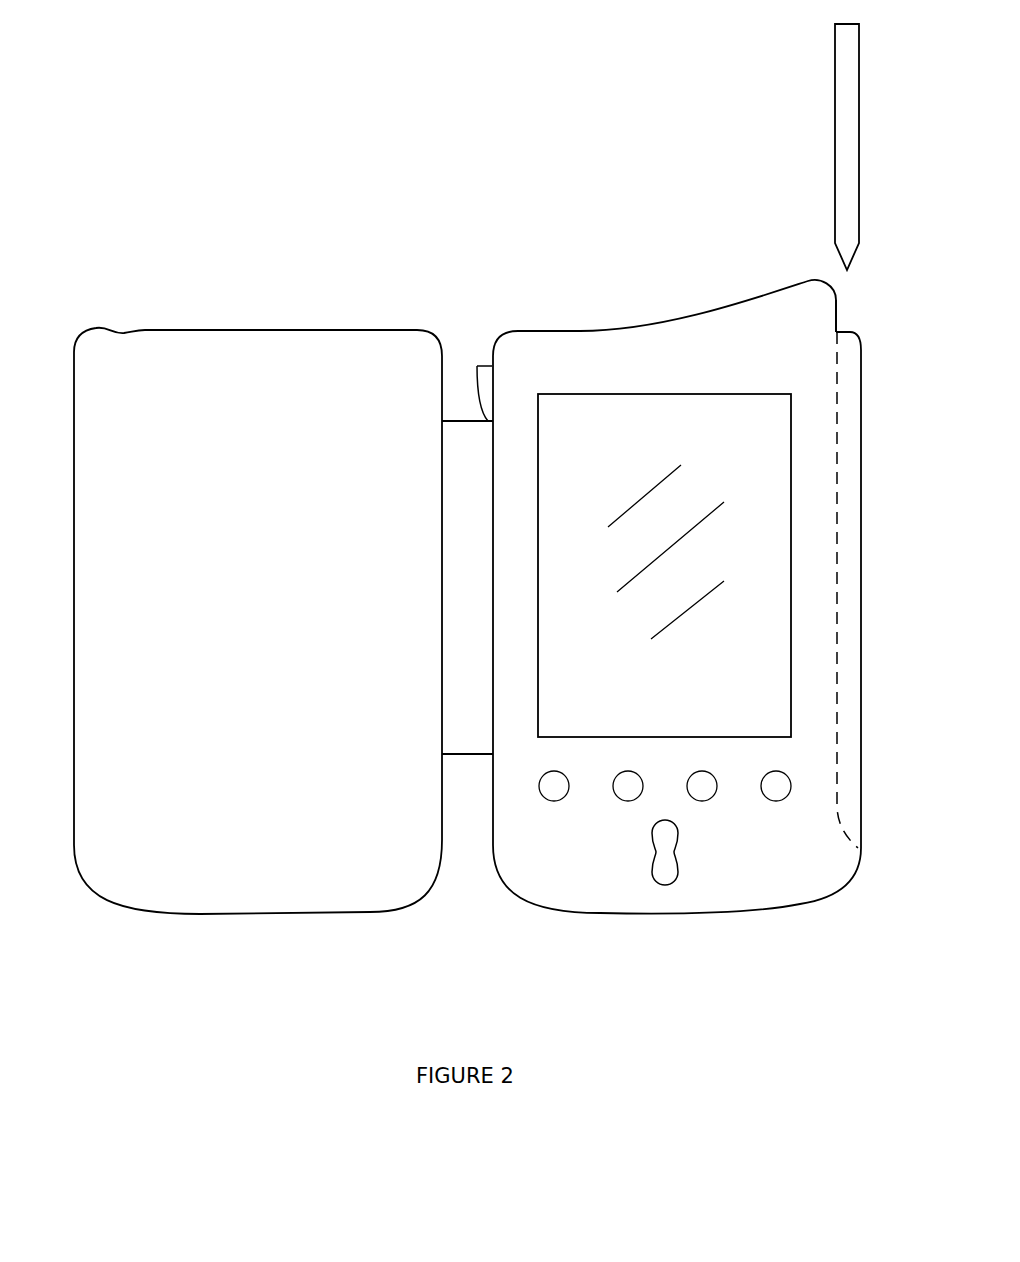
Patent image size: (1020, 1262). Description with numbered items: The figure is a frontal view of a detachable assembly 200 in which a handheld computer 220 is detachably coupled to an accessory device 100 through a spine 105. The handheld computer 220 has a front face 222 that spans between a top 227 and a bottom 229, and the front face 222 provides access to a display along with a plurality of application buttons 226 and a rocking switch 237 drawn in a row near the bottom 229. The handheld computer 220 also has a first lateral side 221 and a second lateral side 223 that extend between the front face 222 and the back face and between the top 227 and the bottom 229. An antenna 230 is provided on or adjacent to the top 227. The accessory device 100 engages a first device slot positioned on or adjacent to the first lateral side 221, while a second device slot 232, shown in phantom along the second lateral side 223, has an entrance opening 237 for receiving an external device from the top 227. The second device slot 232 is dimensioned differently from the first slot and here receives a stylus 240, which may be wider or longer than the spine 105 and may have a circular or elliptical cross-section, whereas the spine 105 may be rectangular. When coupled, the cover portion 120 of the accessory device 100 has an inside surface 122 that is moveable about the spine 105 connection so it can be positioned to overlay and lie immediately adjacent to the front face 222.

The accessory device 100 is at (283, 669).
The spine 105 is at (484, 353).
The cover portion 120 is at (258, 621).
The inside surface 122 is at (188, 377).
The detachable assembly 200 is at (618, 549).
The handheld computer 220 is at (708, 605).
The first lateral side 221 is at (493, 790).
The front face 222 is at (645, 565).
The second lateral side 223 is at (862, 712).
The application buttons 226 is at (553, 787).
The top 227 is at (587, 330).
The bottom 229 is at (610, 912).
The antenna 230 is at (759, 275).
The second device slot 232 is at (848, 410).
The rocking switch 237 is at (665, 865).
The stylus 240 is at (848, 130).